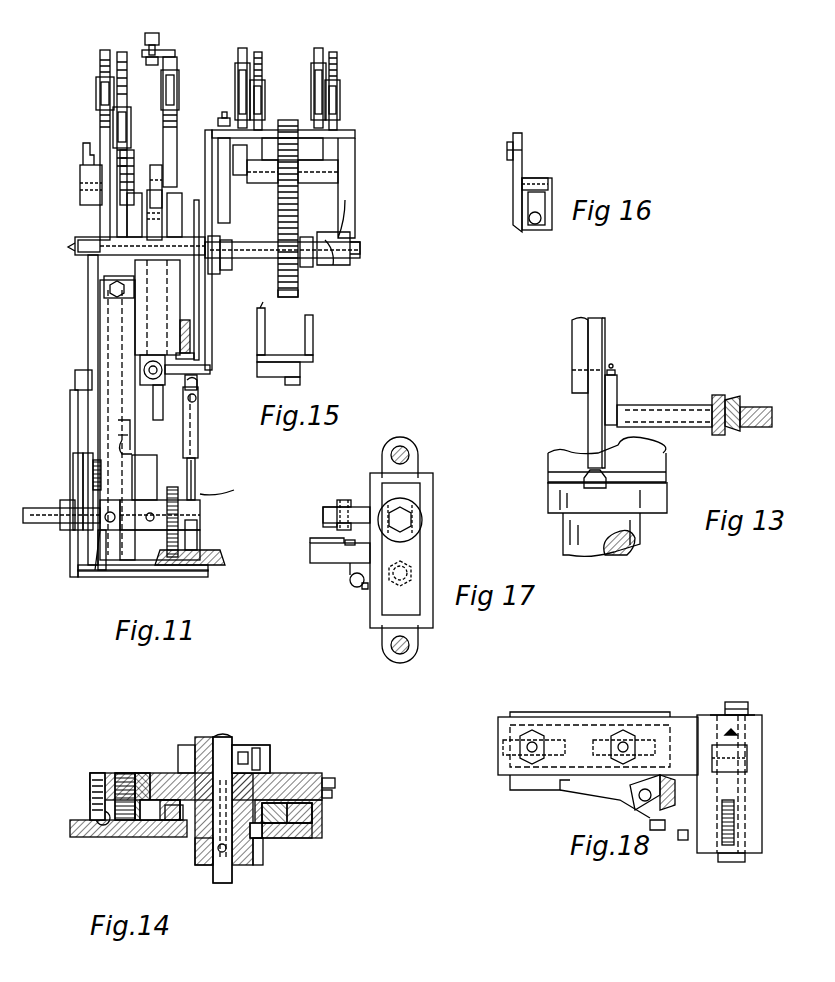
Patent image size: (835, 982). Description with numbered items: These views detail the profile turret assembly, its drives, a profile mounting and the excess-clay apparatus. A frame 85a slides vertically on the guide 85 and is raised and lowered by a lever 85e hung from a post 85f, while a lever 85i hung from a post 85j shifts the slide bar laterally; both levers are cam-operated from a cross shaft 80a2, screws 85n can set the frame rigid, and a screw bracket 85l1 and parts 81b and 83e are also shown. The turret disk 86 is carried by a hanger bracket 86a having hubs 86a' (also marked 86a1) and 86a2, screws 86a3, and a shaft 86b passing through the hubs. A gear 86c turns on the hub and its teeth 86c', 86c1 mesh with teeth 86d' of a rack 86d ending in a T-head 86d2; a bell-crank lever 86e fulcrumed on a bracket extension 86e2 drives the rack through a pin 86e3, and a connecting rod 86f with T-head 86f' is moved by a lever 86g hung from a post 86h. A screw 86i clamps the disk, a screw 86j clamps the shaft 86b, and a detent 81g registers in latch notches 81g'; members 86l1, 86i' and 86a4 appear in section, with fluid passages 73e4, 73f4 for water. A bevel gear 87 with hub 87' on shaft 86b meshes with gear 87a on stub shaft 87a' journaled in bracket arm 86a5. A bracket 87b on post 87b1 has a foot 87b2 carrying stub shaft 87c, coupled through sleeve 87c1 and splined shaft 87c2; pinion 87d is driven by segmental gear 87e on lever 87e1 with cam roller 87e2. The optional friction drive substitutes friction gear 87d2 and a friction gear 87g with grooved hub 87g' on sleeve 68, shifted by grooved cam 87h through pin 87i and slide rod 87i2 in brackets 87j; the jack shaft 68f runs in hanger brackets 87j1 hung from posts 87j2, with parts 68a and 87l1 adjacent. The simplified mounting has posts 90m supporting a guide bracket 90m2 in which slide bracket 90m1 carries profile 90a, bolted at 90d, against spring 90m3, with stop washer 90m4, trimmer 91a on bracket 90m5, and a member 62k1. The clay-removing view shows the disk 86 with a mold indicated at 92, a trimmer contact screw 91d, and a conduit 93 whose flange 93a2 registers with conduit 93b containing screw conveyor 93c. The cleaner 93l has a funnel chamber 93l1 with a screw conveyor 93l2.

In FIG. 11, the post 85j is at (103, 50).
In FIG. 11, the post 85f is at (122, 52).
In FIG. 11, the post 87b1 is at (162, 37).
In FIG. 11, the post 86h is at (176, 66).
In FIG. 11, the rod 81b is at (140, 147).
In FIG. 11, the lever 86g is at (154, 165).
In FIG. 11, the lever 85e is at (149, 186).
In FIG. 11, the vertical guide 85 is at (112, 215).
In FIG. 11, the shaft 80a2 is at (73, 243).
In FIG. 11, the block 85l1 is at (80, 262).
In FIG. 11, the screw 85n is at (111, 410).
In FIG. 11, the lever 85i is at (85, 286).
In FIG. 11, the nut 83e is at (138, 310).
In FIG. 11, the pin 86e3 is at (76, 375).
In FIG. 11, the T-head 86d2 is at (70, 394).
In FIG. 11, the connecting rod 86f is at (150, 359).
In FIG. 11, the pinion gear 87d is at (204, 368).
In FIG. 11, the segmental gear 87e is at (189, 329).
In FIG. 11, the lever 87e1 is at (206, 306).
In FIG. 11, the cam roller 87e2 is at (201, 280).
In FIG. 11, the foot 87b2 is at (202, 381).
In FIG. 15, the foot 87b2 is at (300, 382).
In FIG. 11, the stub shaft 87c is at (200, 393).
In FIG. 11, the T-head 86f' is at (165, 408).
In FIG. 11, the sleeve 87c1 is at (198, 442).
In FIG. 11, the grooved shaft 87c2 is at (195, 471).
In FIG. 11, the bell-crank lever 86e is at (130, 430).
In FIG. 11, the bracket extension 86e2 is at (132, 450).
In FIG. 11, the frame 85a is at (135, 467).
In FIG. 11, the screws 86a3 is at (72, 460).
In FIG. 11, the hanger bracket 86a is at (70, 491).
In FIG. 14, the hanger bracket 86a is at (211, 795).
In FIG. 11, the hub 86a1 is at (63, 497).
In FIG. 11, the shaft 86b is at (30, 522).
In FIG. 14, the shaft 86b is at (232, 873).
In FIG. 11, the screw 86j is at (124, 502).
In FIG. 14, the screw 86j is at (265, 738).
In FIG. 11, the hub 87' is at (160, 530).
In FIG. 11, the hub 86a2 is at (103, 576).
In FIG. 14, the hub 86a2 is at (205, 730).
In FIG. 11, the bevel gear 87a is at (203, 526).
In FIG. 11, the stub shaft 87a' is at (203, 557).
In FIG. 11, the bracket arm 86a5 is at (155, 575).
In FIG. 11, the bevel gear 87 is at (221, 496).
In FIG. 15, the posts 87j2 is at (248, 52).
In FIG. 15, the supporting brackets 87j is at (232, 106).
In FIG. 15, the slide rod 87i2 is at (272, 124).
In FIG. 15, the jack shaft 68f is at (244, 172).
In FIG. 15, the hanger brackets 87j1 is at (248, 188).
In FIG. 15, the column 87l1 is at (230, 212).
In FIG. 15, the pin 87i is at (355, 202).
In FIG. 15, the annular groove 87g' is at (282, 261).
In FIG. 15, the friction gear 87g is at (226, 267).
In FIG. 15, the sleeve 68 is at (305, 268).
In FIG. 15, the rack end 68a is at (296, 294).
In FIG. 15, the grooved cam 87h is at (337, 268).
In FIG. 15, the bracket 87b is at (265, 327).
In FIG. 15, the detent 81g is at (322, 335).
In FIG. 15, the friction gear 87d2 is at (313, 359).
In FIG. 16, the screw conveyor 93l2 is at (522, 230).
In FIG. 16, the profile cleaner 93l is at (548, 192).
In FIG. 16, the funnel shaped chamber 93l1 is at (527, 176).
In FIG. 13, the turret disk 86 is at (572, 354).
In FIG. 13, the contact screw 91d is at (615, 365).
In FIG. 13, the conduit member 93 is at (695, 422).
In FIG. 13, the segmental flange 93a2 is at (717, 397).
In FIG. 13, the conveying conduit 93b is at (737, 400).
In FIG. 13, the screw conveyor 93c is at (771, 414).
In FIG. 13, the body 92 is at (662, 465).
In FIG. 17, the posts 90m is at (410, 455).
In FIG. 18, the posts 90m is at (743, 737).
In FIG. 17, the guide and supporting bracket 90m2 is at (432, 565).
In FIG. 17, the stop member 90m4 is at (420, 520).
In FIG. 18, the stop member 90m4 is at (750, 713).
In FIG. 17, the bracket 90m5 is at (358, 494).
In FIG. 17, the trimmer 91a is at (323, 516).
In FIG. 18, the trimmer 91a is at (659, 826).
In FIG. 17, the profile 90a is at (310, 547).
In FIG. 18, the profile 90a is at (542, 796).
In FIG. 17, the slide bracket 90m1 is at (350, 573).
In FIG. 18, the slide bracket 90m1 is at (553, 744).
In FIG. 17, the spring 90m3 is at (356, 586).
In FIG. 18, the spring 90m3 is at (717, 708).
In FIG. 18, the attaching bolts 90d is at (610, 757).
In FIG. 18, the nut 62k1 is at (726, 862).
In FIG. 14, the base 86l1 is at (96, 840).
In FIG. 14, the screw 86i is at (78, 796).
In FIG. 14, the block 86i' is at (122, 787).
In FIG. 14, the block 86c1 is at (142, 771).
In FIG. 14, the gear 86c is at (160, 788).
In FIG. 14, the teeth 86c' is at (162, 829).
In FIG. 14, the passage 73e4 is at (338, 778).
In FIG. 14, the passage 73f4 is at (333, 795).
In FIG. 14, the rack 86d is at (305, 813).
In FIG. 14, the teeth 86d' is at (296, 838).
In FIG. 14, the latch notches 81g' is at (273, 838).
In FIG. 14, the plate 86a4 is at (258, 852).
In FIG. 14, the hub 86a' is at (185, 853).